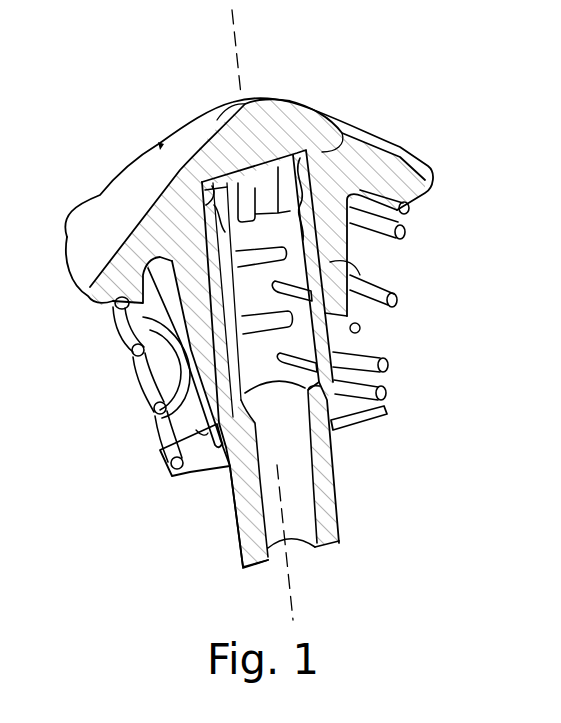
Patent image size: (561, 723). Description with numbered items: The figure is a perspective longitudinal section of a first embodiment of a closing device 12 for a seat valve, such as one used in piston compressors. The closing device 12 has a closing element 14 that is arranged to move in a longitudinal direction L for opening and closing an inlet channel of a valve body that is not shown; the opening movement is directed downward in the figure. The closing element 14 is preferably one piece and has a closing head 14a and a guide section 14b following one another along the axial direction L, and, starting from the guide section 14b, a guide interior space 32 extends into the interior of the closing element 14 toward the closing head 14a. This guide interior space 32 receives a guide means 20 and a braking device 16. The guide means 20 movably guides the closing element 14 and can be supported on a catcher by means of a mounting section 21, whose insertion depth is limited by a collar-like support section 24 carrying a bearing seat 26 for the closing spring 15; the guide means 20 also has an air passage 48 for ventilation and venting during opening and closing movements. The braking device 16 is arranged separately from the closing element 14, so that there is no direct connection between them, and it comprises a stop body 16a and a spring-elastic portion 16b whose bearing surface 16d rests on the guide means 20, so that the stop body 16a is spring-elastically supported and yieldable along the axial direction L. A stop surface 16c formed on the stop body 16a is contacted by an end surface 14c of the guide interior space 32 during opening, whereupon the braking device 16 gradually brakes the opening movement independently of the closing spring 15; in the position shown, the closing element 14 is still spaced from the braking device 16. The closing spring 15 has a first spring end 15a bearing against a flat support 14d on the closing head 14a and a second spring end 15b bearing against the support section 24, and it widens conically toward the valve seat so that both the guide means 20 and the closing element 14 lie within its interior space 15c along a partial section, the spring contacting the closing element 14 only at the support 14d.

The closing device 12 is at (446, 112).
The closing element 14 is at (112, 212).
The closing head 14a is at (197, 155).
The guide section 14b is at (337, 272).
The end surface 14c is at (247, 178).
The support 14d is at (100, 311).
The closing spring 15 is at (400, 303).
The first spring end 15a is at (407, 208).
The second spring end 15b is at (207, 432).
The interior space 15c is at (157, 375).
The braking device 16 is at (278, 150).
The stop body 16a is at (310, 150).
The spring-elastic portion 16b is at (337, 246).
The stop surface 16c is at (295, 126).
The bearing surface 16d is at (318, 392).
The guide means 20 is at (355, 318).
The mounting section 21 is at (252, 530).
The support section 24 is at (377, 414).
The bearing seat 26 is at (390, 408).
The guide interior space 32 is at (343, 130).
The air passage 48 is at (303, 513).
The longitudinal axis L is at (237, 58).